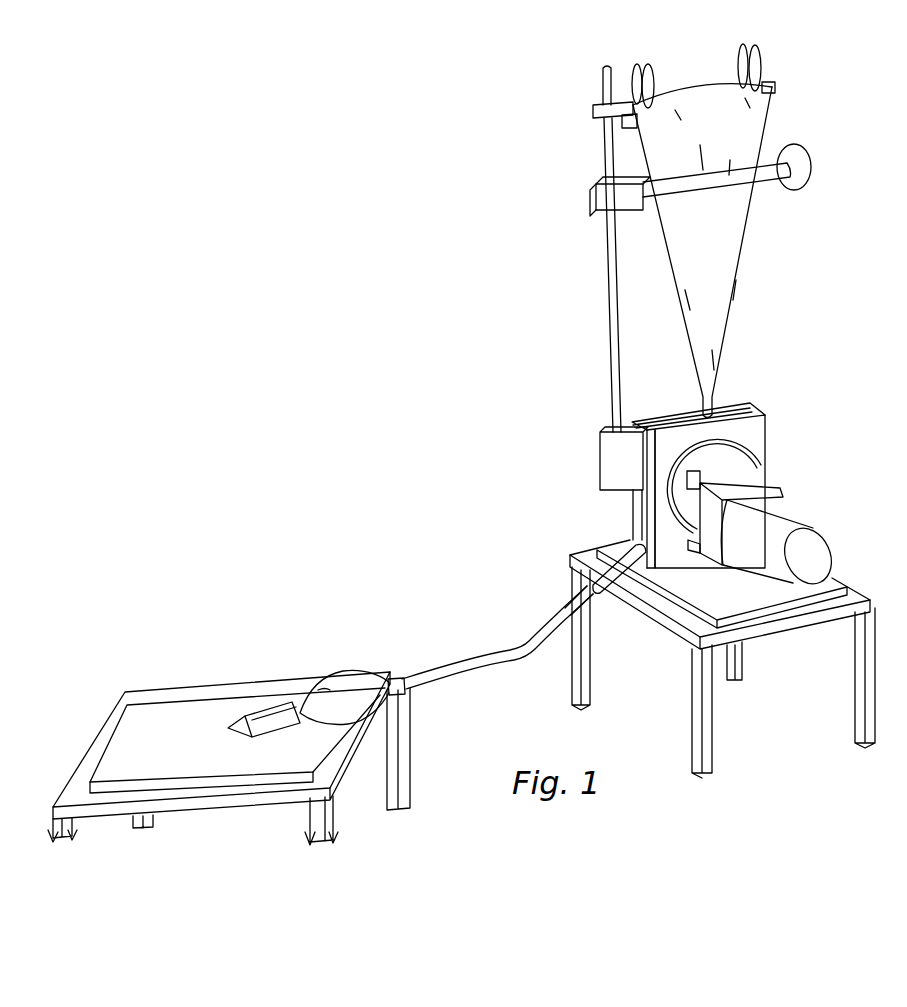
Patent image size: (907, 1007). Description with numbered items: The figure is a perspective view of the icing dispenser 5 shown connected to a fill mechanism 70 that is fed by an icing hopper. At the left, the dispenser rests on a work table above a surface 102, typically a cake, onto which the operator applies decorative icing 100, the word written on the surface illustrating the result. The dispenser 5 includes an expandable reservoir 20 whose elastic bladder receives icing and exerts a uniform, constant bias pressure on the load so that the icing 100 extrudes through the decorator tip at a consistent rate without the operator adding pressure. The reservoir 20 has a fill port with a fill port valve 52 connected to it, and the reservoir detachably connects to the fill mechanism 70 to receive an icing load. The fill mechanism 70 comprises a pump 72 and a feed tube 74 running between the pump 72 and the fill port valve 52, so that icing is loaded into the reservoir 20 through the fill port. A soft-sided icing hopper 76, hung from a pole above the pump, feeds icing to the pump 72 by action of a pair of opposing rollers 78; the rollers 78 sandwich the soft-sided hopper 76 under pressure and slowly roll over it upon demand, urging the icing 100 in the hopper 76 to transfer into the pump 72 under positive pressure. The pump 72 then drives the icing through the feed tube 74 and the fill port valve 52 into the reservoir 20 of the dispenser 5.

The icing dispenser 5 is at (280, 689).
The expandable reservoir 20 is at (353, 673).
The fill port valve 52 is at (404, 688).
The fill mechanism 70 is at (760, 440).
The pump 72 is at (660, 498).
The feed tube 74 is at (502, 648).
The soft-sided icing hopper 76 is at (737, 215).
The opposing rollers 78 is at (810, 158).
The icing 100 is at (142, 720).
The surface 102 is at (193, 712).